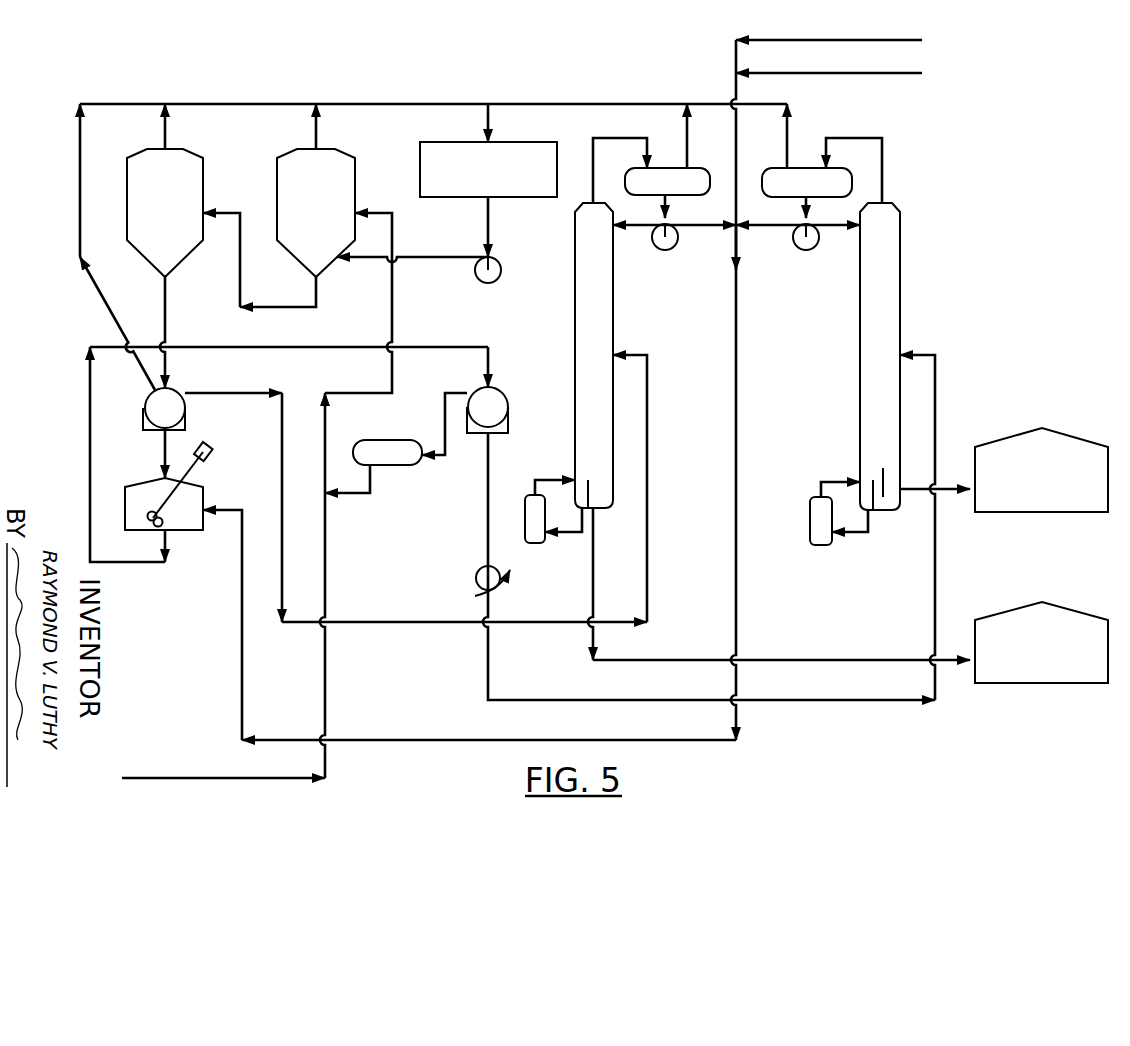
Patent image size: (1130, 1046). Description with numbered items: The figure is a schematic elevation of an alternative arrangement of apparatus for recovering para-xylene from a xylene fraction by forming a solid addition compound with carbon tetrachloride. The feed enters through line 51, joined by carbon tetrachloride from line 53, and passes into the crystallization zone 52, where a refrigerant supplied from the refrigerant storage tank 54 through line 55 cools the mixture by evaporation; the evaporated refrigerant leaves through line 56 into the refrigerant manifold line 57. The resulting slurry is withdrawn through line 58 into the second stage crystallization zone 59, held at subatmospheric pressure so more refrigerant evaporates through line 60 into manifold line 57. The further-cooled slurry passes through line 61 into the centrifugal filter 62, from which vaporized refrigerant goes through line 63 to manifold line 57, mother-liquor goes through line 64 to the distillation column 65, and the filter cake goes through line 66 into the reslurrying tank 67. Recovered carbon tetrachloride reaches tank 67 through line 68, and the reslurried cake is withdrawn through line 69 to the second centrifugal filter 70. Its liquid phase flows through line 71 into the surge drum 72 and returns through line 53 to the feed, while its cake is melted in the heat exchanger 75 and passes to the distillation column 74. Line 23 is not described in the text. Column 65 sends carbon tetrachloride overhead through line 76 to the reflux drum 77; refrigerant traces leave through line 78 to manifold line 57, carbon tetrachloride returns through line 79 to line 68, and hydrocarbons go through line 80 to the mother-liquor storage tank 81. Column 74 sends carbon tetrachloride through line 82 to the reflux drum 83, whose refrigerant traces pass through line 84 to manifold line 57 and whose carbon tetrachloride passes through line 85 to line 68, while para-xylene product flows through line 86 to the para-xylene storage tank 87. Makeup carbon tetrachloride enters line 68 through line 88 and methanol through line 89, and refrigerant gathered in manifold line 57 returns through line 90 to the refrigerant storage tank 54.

The pump discharge line 23 is at (486, 535).
The feed line 51 is at (232, 778).
The crystallization zone 52 is at (304, 212).
The carbon tetrachloride line 53 is at (350, 496).
The refrigerant storage tank 54 is at (470, 142).
The refrigerant line 55 is at (488, 245).
The evaporated refrigerant line 56 is at (316, 140).
The refrigerant manifold line 57 is at (370, 104).
The slurry line 58 is at (313, 300).
The second stage crystallization zone 59 is at (153, 212).
The evaporated refrigerant line 60 is at (165, 140).
The slurry line 61 is at (165, 325).
The centrifugal filter 62 is at (153, 417).
The refrigerant vapor line 63 is at (80, 190).
The mother-liquor line 64 is at (385, 622).
The distillation column 65 is at (581, 364).
The filter cake line 66 is at (160, 455).
The reslurrying tank 67 is at (150, 482).
The carbon tetrachloride return line 68 is at (740, 430).
The reslurry line 69 is at (90, 470).
The second centrifugal filter 70 is at (476, 416).
The liquid phase line 71 is at (445, 428).
The surge drum 72 is at (388, 440).
The distillation column 74 is at (868, 364).
The heat exchanger 75 is at (505, 578).
The overhead line 76 is at (600, 172).
The reflux drum 77 is at (655, 191).
The refrigerant trace line 78 is at (688, 150).
The carbon tetrachloride line 79 is at (702, 230).
The hydrocarbon bottoms line 80 is at (830, 660).
The mother-liquor storage tank 81 is at (1055, 602).
The overhead line 82 is at (890, 175).
The reflux drum 83 is at (795, 192).
The refrigerant trace line 84 is at (787, 150).
The carbon tetrachloride line 85 is at (765, 230).
The para-xylene product line 86 is at (905, 493).
The para-xylene storage tank 87 is at (1055, 430).
The makeup carbon tetrachloride line 88 is at (862, 40).
The methanol line 89 is at (862, 73).
The refrigerant return line 90 is at (488, 138).